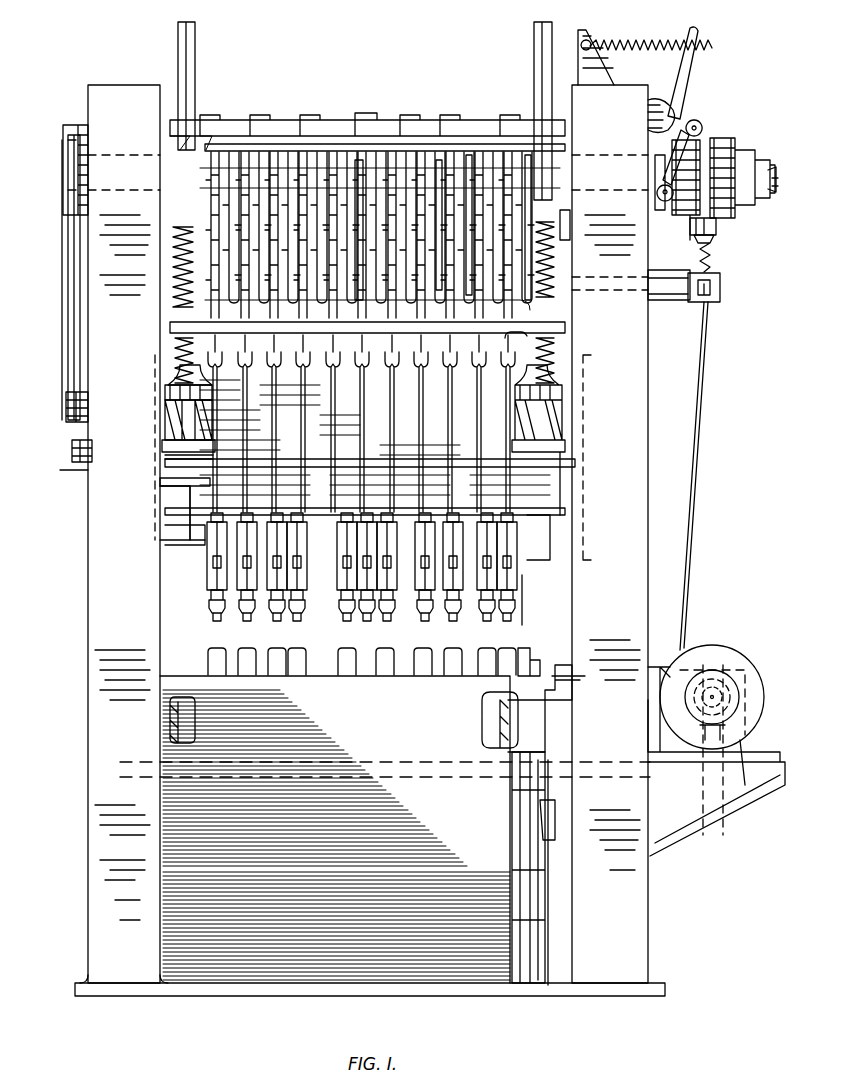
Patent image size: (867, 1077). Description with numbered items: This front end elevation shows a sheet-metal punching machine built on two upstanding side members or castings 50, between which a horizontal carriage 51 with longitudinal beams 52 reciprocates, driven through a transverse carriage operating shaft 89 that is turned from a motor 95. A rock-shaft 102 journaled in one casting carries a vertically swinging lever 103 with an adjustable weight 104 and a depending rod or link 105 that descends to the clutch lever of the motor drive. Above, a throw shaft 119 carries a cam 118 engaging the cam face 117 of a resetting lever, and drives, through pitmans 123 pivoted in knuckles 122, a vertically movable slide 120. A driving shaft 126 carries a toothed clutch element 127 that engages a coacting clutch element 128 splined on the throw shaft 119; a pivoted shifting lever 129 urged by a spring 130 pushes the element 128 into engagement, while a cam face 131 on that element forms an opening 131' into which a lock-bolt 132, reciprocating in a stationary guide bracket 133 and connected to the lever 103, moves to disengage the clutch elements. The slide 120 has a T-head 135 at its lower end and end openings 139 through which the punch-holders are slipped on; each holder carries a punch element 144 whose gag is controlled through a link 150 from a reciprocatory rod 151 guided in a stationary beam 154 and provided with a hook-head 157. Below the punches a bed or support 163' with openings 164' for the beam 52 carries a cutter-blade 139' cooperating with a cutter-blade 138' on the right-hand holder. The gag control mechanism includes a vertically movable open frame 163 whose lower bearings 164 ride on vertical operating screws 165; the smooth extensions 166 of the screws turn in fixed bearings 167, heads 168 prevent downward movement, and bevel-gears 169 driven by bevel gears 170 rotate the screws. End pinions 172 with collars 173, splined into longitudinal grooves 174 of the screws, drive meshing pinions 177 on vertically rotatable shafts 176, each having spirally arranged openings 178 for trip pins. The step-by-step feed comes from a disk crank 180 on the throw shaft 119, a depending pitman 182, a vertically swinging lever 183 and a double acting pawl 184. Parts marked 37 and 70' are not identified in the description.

The cutting mechanism 37 is at (521, 520).
The side members or castings 50 is at (100, 624).
The carriage 51 is at (190, 718).
The longitudinal beams 52 is at (488, 720).
The box 70' is at (584, 685).
The carriage operating shaft 89 is at (410, 770).
The motor 95 is at (760, 694).
The rock-shaft 102 is at (683, 302).
The vertically swinging lever 103 is at (712, 305).
The weight 104 is at (722, 295).
The depending rod or link 105 is at (712, 398).
The cam face 117 is at (478, 62).
The cam 118 is at (550, 147).
The throw shaft 119 is at (470, 155).
The slide 120 is at (184, 488).
The knuckles 122 is at (512, 268).
The pitmans 123 is at (440, 170).
The driving shaft 126 is at (762, 200).
The toothed clutch element 127 is at (742, 165).
The coacting clutch element 128 is at (700, 160).
The shifting lever 129 is at (686, 70).
The spring 130 is at (643, 42).
The cam face 131 is at (693, 147).
The opening 131' is at (507, 361).
The lock-bolt 132 is at (716, 232).
The stationary guide bracket 133 is at (718, 247).
The T-head 135 is at (207, 558).
The cutter-blade 138' is at (577, 600).
The openings 139 is at (427, 572).
The cutter-blade 139' is at (575, 645).
The punch element 144 is at (305, 595).
The link 150 is at (518, 430).
The reciprocatory rod 151 is at (614, 304).
The guide beam 154 is at (556, 226).
The hook-head 157 is at (512, 342).
The frame 163 is at (150, 305).
The support 163' is at (338, 852).
The bearings 164 is at (336, 335).
The openings 164' is at (332, 841).
The operating screws 165 is at (208, 655).
The smooth extensions 166 is at (170, 375).
The fixed bearings 167 is at (172, 425).
The heads 168 is at (172, 404).
The bevel-gears 169 is at (160, 485).
The bevel gears 170 is at (190, 524).
The end pinions 172 is at (185, 127).
The collars 173 is at (207, 146).
The longitudinal grooves 174 is at (195, 52).
The vertically rotatable shafts 176 is at (309, 150).
The pinions 177 is at (500, 126).
The spirally arranged openings 178 is at (361, 153).
The disk crank 180 is at (77, 128).
The pitman 182 is at (68, 245).
The vertically swinging lever 183 is at (66, 433).
The double acting pawl 184 is at (72, 462).